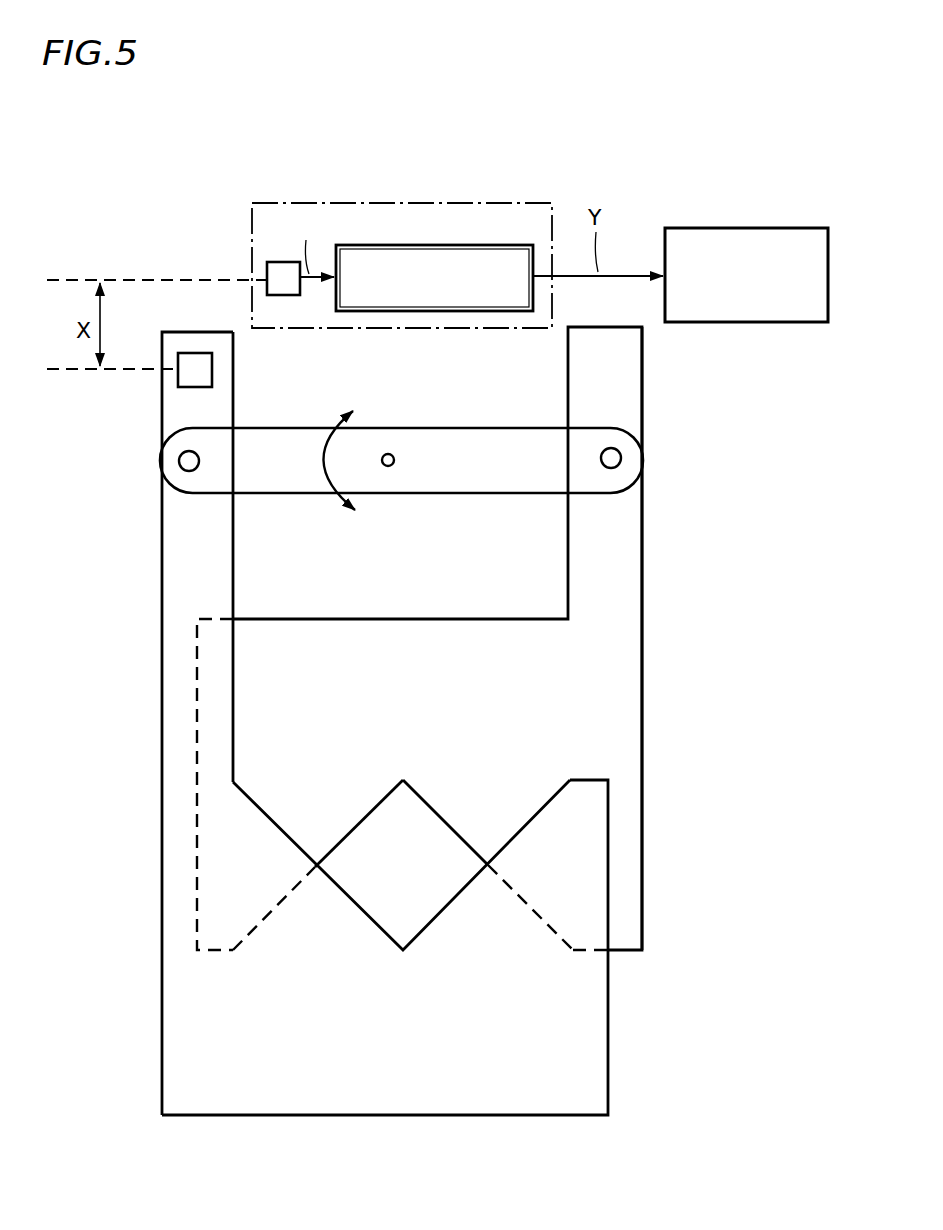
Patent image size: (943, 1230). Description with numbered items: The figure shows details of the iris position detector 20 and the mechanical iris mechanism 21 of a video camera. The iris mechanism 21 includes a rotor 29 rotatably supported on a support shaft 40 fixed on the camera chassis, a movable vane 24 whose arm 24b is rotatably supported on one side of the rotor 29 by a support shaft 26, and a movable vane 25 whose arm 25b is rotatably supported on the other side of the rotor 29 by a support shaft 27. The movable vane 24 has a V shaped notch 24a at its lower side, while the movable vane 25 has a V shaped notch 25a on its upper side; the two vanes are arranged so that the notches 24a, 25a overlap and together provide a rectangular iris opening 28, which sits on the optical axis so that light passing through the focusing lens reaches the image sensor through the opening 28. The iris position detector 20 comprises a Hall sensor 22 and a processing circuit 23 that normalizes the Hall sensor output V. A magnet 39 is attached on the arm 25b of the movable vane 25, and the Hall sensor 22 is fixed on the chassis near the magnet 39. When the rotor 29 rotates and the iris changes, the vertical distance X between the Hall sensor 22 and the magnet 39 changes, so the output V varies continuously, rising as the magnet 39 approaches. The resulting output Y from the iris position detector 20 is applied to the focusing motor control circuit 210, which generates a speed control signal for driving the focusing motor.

The iris position detector 20 is at (551, 224).
The Hall sensor 22 is at (283, 262).
The processing circuit 23 is at (393, 245).
The focusing motor control circuit 210 is at (713, 228).
The iris mechanism 21 is at (428, 721).
The magnet 39 is at (212, 373).
The rotor 29 is at (403, 487).
The support shaft 27 is at (179, 462).
The support shaft 26 is at (622, 457).
The support shaft 40 is at (390, 468).
The movable vane 24 is at (458, 638).
The V shaped notch 24a is at (366, 829).
The arm 24b is at (622, 551).
The iris opening 28 is at (440, 833).
The movable vane 25 is at (396, 721).
The V shaped notch 25a is at (439, 900).
The arm 25b is at (177, 563).